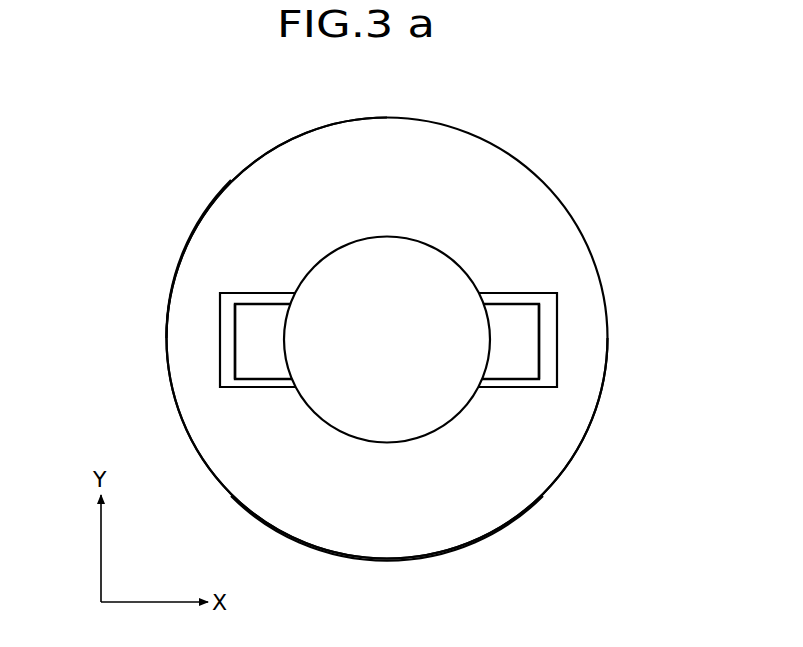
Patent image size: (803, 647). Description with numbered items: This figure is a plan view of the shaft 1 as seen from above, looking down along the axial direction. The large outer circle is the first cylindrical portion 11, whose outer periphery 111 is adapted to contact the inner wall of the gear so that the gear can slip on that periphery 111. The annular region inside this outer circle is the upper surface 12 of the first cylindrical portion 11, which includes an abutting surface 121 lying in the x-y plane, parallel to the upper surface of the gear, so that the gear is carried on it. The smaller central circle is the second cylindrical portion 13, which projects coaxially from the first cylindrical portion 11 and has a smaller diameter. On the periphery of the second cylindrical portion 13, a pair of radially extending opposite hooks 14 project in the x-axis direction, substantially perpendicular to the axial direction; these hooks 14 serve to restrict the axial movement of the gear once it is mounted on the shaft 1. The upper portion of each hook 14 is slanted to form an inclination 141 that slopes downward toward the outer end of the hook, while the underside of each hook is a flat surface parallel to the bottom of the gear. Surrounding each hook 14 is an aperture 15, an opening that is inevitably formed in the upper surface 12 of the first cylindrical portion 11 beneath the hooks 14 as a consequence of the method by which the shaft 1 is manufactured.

The shaft 1 is at (240, 155).
The first cylindrical portion 11 is at (230, 215).
The outer periphery 111 is at (178, 262).
The upper surface 12 is at (525, 423).
The abutting surface 121 is at (445, 471).
The second cylindrical portion 13 is at (442, 276).
The hooks 14 is at (232, 333).
The inclination 141 is at (248, 360).
The aperture 15 is at (260, 387).